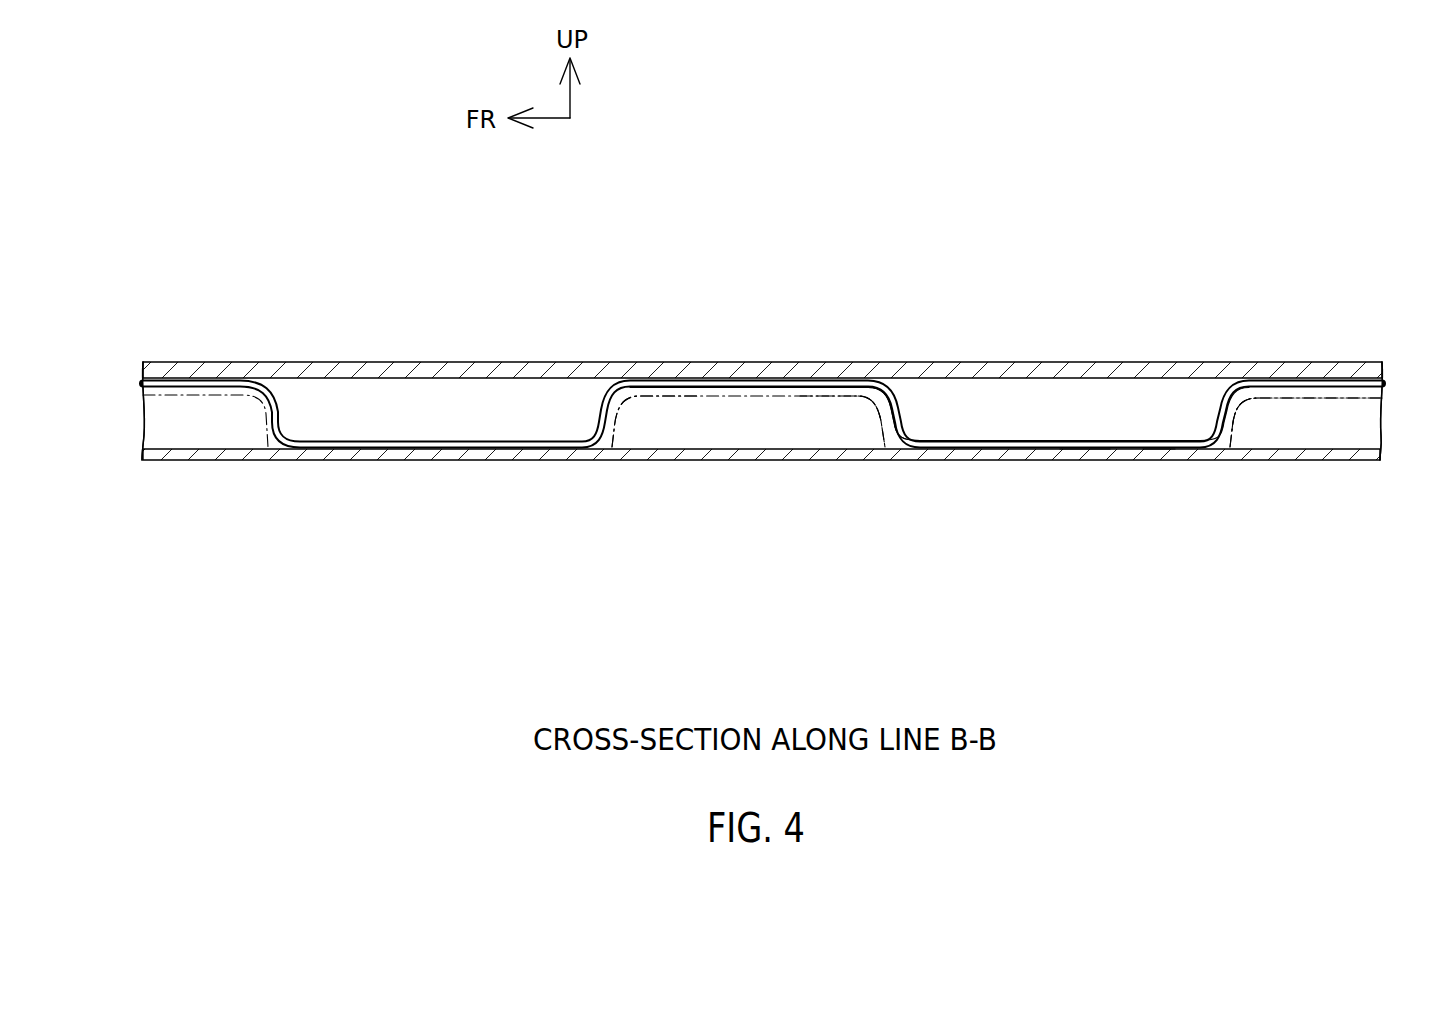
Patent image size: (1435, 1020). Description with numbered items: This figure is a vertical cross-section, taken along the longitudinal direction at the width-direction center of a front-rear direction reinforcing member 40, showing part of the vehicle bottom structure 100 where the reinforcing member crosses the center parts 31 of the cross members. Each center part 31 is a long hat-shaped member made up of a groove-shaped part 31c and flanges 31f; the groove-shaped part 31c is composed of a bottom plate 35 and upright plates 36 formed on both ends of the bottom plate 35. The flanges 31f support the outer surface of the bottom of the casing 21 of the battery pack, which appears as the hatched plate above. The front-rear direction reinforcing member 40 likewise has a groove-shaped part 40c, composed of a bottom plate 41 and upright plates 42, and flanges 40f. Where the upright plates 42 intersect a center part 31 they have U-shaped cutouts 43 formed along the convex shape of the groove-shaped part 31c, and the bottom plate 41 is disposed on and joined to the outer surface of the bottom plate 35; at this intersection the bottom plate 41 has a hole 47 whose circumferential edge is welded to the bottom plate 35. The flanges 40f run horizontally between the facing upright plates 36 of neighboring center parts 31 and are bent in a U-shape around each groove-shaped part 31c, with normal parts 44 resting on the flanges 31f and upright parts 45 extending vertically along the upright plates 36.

The casing 21 is at (1164, 363).
The center part 31 is at (1010, 441).
The groove-shaped part 31c is at (1076, 182).
The flange 31f is at (855, 378).
The bottom plate 35 is at (955, 442).
The upright plate 36 is at (902, 411).
The front-rear direction reinforcing member 40 is at (1300, 462).
The groove-shaped part 40c is at (1266, 430).
The flange 40f is at (1325, 399).
The bottom plate 41 is at (1157, 461).
The upright plate 42 is at (1240, 417).
The U-shaped cutout 43 is at (882, 414).
The normal part 44 is at (673, 396).
The upright part 45 is at (870, 400).
The hole 47 is at (1085, 455).
The vehicle bottom structure 100 is at (958, 547).